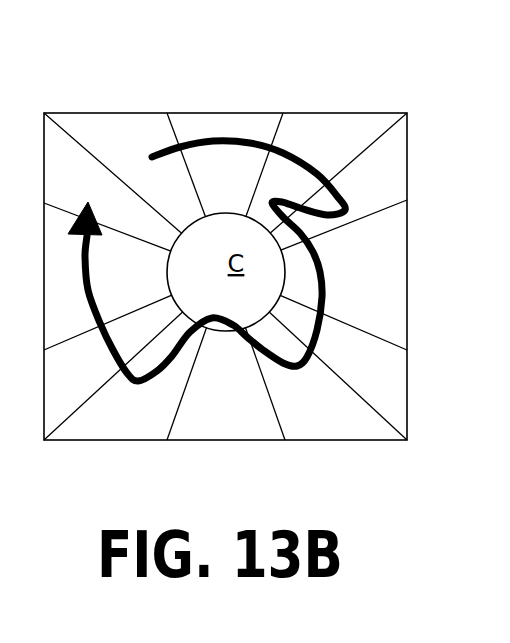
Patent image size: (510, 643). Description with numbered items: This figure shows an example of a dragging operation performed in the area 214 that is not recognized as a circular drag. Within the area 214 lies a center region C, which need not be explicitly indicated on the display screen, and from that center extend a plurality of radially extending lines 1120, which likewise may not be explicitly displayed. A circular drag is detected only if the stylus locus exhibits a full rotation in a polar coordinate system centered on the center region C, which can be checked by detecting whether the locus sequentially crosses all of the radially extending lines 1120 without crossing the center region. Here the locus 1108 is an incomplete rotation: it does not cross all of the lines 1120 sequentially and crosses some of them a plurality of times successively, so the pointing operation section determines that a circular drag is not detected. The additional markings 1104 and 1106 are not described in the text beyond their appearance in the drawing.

The area 214 is at (357, 433).
The fold line 1104 is at (123, 170).
The fold line 1106 is at (217, 328).
The locus 1108 is at (253, 140).
The radially extending lines 1120 is at (280, 133).